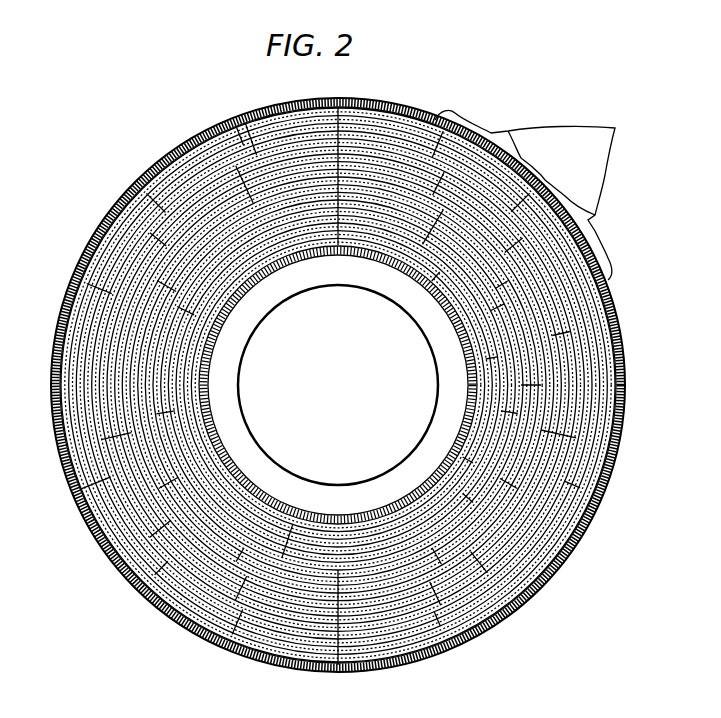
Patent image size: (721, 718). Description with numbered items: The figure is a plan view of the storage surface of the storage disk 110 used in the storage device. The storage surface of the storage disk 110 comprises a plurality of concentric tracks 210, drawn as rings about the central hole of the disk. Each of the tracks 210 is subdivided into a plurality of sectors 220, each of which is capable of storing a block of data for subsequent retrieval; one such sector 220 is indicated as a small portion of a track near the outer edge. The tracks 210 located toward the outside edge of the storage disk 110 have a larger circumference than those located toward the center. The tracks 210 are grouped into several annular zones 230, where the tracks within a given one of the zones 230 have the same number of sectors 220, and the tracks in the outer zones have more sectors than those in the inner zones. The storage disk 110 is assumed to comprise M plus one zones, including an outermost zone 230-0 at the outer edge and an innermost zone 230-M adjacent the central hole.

The storage disk 110 is at (100, 163).
The sectors 220 is at (547, 195).
The annular zones 230 is at (537, 418).
The outermost zone 230-0 is at (232, 127).
The innermost zone 230-M is at (270, 248).
The concentric tracks 210 is at (545, 540).